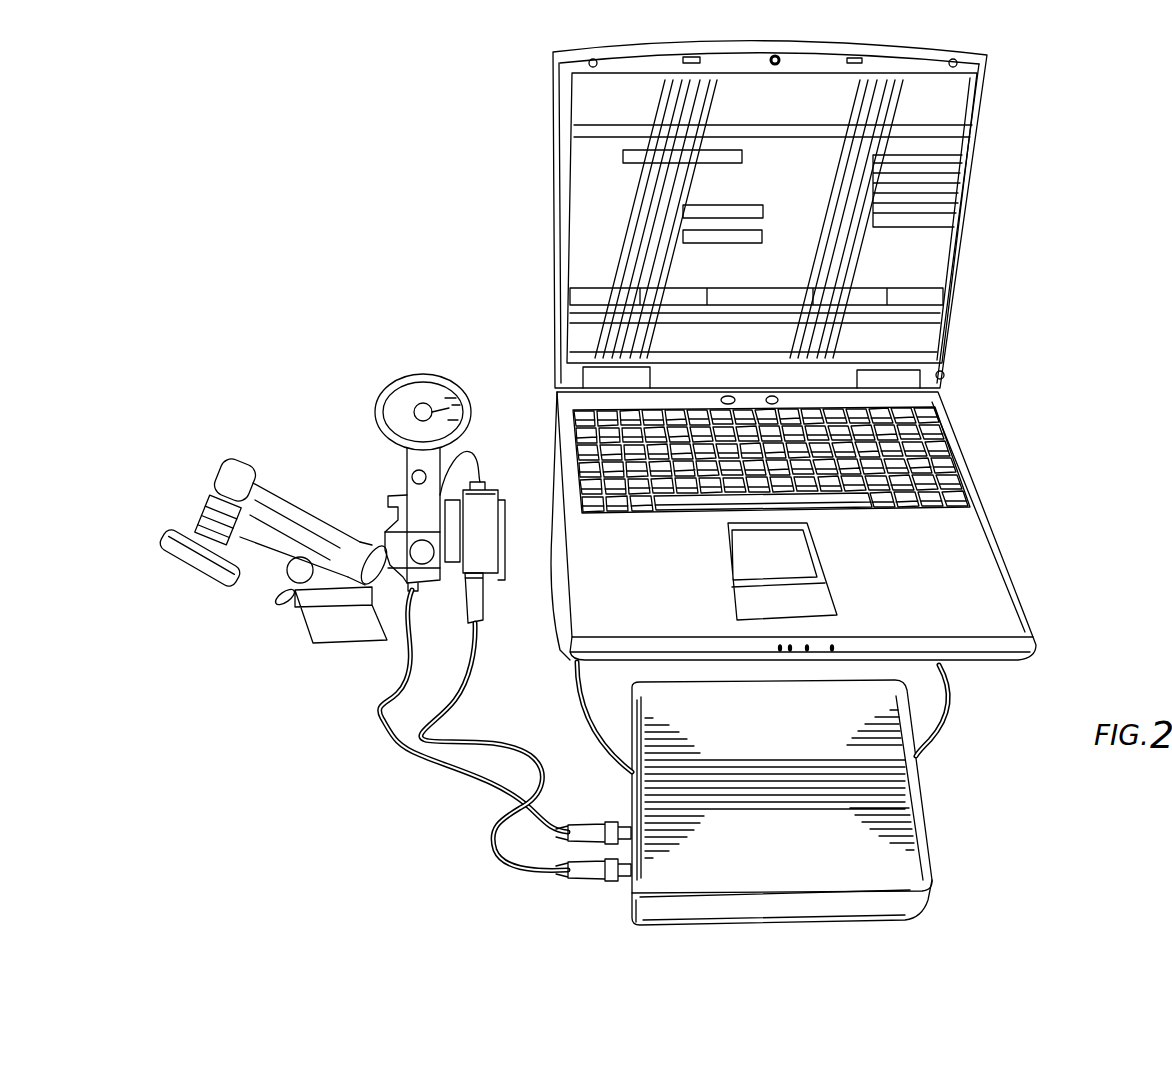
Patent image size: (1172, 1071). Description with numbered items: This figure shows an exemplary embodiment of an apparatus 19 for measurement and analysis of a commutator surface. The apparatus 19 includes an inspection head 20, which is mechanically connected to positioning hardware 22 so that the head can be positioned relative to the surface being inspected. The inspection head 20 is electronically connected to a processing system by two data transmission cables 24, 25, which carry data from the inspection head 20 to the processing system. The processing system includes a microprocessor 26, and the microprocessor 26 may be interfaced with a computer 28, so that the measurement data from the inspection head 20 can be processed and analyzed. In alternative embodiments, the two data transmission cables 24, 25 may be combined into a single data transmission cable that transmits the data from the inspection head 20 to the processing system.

The apparatus 19 is at (207, 362).
The inspection head 20 is at (422, 362).
The positioning hardware 22 is at (258, 447).
The data transmission cable 24 is at (412, 623).
The data transmission cable 25 is at (470, 640).
The microprocessor 26 is at (795, 722).
The computer 28 is at (922, 548).